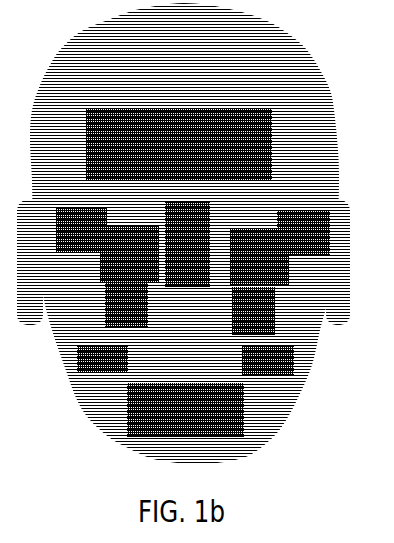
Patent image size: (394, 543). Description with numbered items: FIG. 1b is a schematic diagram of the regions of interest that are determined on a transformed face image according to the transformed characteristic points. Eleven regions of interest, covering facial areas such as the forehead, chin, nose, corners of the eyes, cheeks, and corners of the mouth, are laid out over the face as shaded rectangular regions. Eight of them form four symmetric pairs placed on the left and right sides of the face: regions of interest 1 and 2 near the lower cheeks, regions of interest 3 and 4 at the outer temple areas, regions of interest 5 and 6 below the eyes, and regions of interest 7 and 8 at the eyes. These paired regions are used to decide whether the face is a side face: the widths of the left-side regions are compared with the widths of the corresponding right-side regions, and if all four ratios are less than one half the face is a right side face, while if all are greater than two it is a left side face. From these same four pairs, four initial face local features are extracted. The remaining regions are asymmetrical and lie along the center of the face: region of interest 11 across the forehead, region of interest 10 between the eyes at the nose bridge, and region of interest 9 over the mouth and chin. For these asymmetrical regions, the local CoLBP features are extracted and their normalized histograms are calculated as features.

The region of interest 1 is at (102, 359).
The region of interest 2 is at (268, 360).
The region of interest 3 is at (81, 229).
The region of interest 4 is at (303, 232).
The region of interest 5 is at (126, 304).
The region of interest 6 is at (253, 311).
The region of interest 7 is at (129, 253).
The region of interest 8 is at (259, 256).
The asymmetrical region of interest 9 is at (185, 410).
The asymmetrical region of interest 10 is at (187, 244).
The asymmetrical region of interest 11 is at (179, 144).